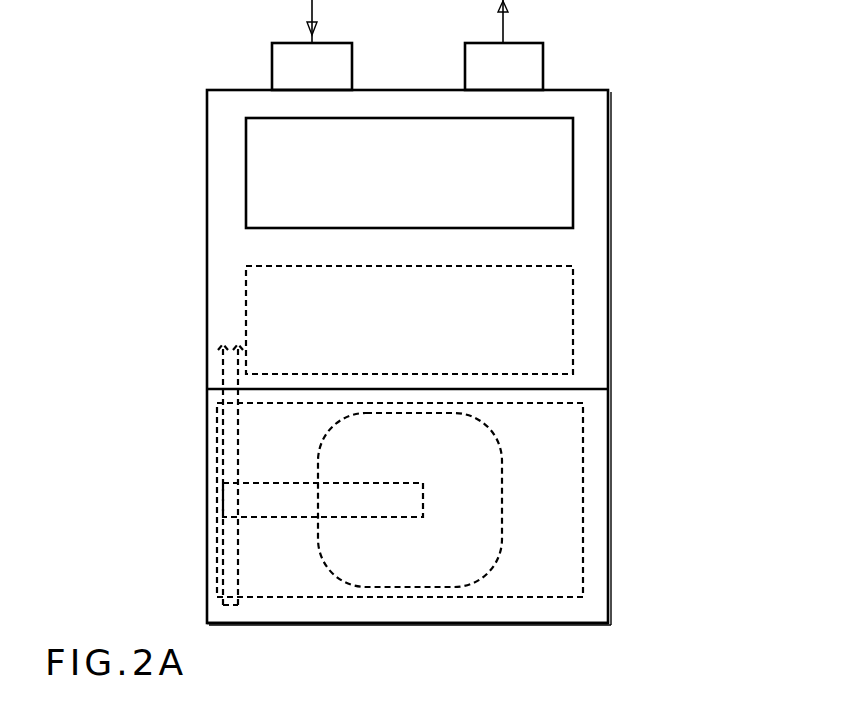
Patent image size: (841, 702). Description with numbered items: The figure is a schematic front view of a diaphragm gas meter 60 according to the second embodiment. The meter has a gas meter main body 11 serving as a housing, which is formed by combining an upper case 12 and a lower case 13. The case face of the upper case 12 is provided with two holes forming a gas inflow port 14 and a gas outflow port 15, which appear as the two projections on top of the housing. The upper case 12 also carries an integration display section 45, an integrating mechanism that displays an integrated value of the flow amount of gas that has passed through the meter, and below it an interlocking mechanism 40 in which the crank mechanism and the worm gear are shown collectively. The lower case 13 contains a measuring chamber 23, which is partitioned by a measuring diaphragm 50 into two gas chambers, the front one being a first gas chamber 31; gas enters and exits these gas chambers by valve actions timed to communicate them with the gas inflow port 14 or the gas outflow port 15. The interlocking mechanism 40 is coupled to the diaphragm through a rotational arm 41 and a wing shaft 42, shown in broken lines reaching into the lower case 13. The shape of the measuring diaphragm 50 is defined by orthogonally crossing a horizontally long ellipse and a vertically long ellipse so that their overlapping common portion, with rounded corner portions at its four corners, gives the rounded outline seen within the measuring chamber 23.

The gas meter main body 11 is at (641, 362).
The upper case 12 is at (608, 228).
The lower case 13 is at (610, 465).
The gas inflow port 14 is at (352, 64).
The gas outflow port 15 is at (543, 64).
The measuring chamber 23 is at (571, 568).
The first gas chamber 31 is at (543, 587).
The interlocking mechanism 40 is at (573, 302).
The rotational arm 41 is at (278, 505).
The wing shaft 42 is at (232, 458).
The integration display section 45 is at (573, 172).
The measuring diaphragm 50 is at (502, 517).
The diaphragm gas meter 60 is at (207, 210).